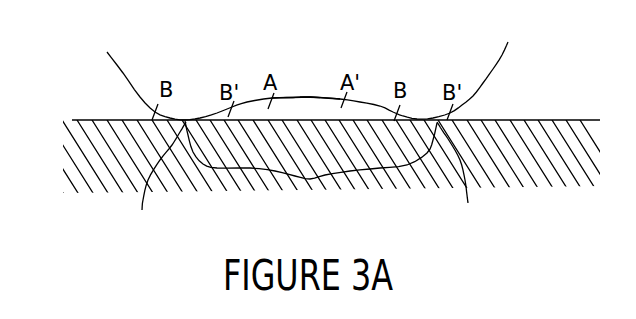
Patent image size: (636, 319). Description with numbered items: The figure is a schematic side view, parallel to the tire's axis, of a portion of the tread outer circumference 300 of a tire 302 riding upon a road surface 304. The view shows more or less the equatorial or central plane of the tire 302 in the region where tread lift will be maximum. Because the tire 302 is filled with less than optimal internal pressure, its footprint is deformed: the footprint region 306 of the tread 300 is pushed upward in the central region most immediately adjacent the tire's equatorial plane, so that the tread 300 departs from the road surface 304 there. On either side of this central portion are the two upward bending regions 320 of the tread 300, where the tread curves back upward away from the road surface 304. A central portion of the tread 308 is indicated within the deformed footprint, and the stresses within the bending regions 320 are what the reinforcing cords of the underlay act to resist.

The tread outer circumference 300 is at (499, 63).
The tire 302 is at (323, 51).
The road surface 304 is at (553, 116).
The footprint region 306 is at (309, 179).
The flattened central portion 308 is at (307, 94).
The upward bending regions 320 is at (309, 177).